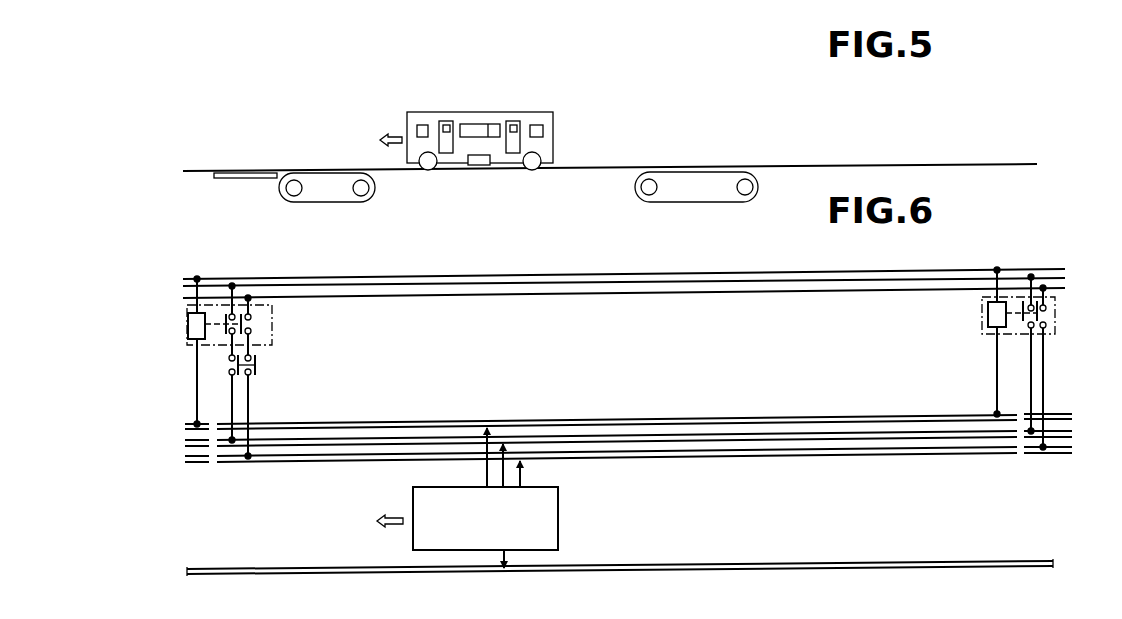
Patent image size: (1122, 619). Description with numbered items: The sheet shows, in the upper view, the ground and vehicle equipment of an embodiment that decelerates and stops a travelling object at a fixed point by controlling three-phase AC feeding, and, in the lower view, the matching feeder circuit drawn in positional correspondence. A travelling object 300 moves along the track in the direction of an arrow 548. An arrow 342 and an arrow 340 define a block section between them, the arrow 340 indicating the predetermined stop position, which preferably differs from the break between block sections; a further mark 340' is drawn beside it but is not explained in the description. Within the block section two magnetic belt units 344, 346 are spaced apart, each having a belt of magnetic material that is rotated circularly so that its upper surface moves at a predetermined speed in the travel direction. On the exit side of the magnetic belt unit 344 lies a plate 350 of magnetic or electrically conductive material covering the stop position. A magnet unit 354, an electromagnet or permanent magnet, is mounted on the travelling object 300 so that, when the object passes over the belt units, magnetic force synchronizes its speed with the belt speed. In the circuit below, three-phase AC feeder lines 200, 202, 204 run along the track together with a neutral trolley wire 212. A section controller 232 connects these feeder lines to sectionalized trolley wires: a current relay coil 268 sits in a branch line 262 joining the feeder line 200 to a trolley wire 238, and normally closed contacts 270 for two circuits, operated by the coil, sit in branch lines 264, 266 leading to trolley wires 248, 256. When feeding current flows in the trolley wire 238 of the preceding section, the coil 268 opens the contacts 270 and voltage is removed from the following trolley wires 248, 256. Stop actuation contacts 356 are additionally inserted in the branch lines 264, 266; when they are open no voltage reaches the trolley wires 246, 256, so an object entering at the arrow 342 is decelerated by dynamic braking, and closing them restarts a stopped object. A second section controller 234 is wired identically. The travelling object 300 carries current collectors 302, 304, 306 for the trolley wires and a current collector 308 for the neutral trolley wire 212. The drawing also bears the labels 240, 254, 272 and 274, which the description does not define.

In FIG. 5, the travelling object 300 is at (500, 113).
In FIG. 6, the travelling object 300 is at (558, 497).
In FIG. 5, the arrow 342 is at (1011, 163).
In FIG. 5, the magnet unit 354 is at (482, 167).
In FIG. 5, the arrow 548 is at (383, 133).
In FIG. 5, the sensing point 340' is at (208, 146).
In FIG. 5, the arrow 340 is at (262, 146).
In FIG. 5, the plate 350 is at (228, 180).
In FIG. 5, the magnetic belt unit 344 is at (327, 203).
In FIG. 5, the magnetic belt unit 346 is at (693, 202).
In FIG. 6, the three-phase AC feeder line 200 is at (383, 277).
In FIG. 6, the three-phase AC feeder line 202 is at (470, 283).
In FIG. 6, the three-phase AC feeder line 204 is at (540, 293).
In FIG. 6, the signal bus conductor 240 is at (320, 422).
In FIG. 6, the sectionalized trolley wire 248 is at (365, 438).
In FIG. 6, the sectionalized trolley wire 256 is at (408, 453).
In FIG. 6, the sectionalized trolley wire 238 is at (195, 423).
In FIG. 6, the trolley wire 246 is at (186, 441).
In FIG. 6, the bus conductor segment 254 is at (186, 461).
In FIG. 6, the branch line 262 is at (195, 292).
In FIG. 6, the branch line 264 is at (233, 290).
In FIG. 6, the branch line 266 is at (250, 306).
In FIG. 6, the section controller 232 is at (188, 322).
In FIG. 6, the current relay coil 268 is at (188, 335).
In FIG. 6, the normally closed contacts 270 is at (252, 328).
In FIG. 6, the stop actuation contacts 356 is at (257, 366).
In FIG. 6, the section controller 234 is at (986, 308).
In FIG. 6, the relay unit 272 is at (988, 324).
In FIG. 6, the relay contacts 274 is at (1050, 317).
In FIG. 6, the current collector 302 is at (490, 424).
In FIG. 6, the current collector 304 is at (530, 441).
In FIG. 6, the current collector 306 is at (524, 463).
In FIG. 6, the current collector 308 is at (513, 572).
In FIG. 6, the neutral trolley wire 212 is at (318, 575).